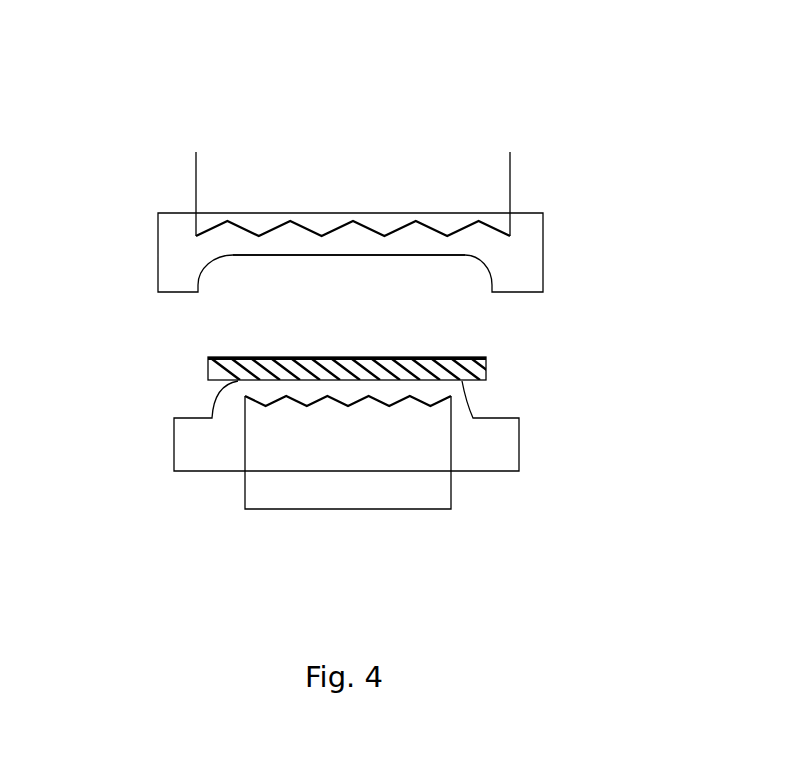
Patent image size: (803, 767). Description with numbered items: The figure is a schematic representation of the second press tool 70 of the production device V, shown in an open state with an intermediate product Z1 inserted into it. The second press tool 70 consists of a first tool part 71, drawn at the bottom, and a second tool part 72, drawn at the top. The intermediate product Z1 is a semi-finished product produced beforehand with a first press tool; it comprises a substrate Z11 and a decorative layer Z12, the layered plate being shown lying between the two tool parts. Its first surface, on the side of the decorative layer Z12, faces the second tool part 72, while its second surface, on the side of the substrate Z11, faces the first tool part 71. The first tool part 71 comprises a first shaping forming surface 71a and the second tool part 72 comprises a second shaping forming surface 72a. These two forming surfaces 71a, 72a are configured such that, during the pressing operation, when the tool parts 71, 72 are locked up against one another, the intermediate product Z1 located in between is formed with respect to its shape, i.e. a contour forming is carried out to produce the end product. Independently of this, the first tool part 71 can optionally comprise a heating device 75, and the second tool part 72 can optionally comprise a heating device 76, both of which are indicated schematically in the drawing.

The device V is at (545, 72).
The second press tool 70 is at (540, 134).
The second tool part 72 is at (175, 258).
The second shaping forming surface 72a is at (350, 257).
The heating device 76 is at (510, 173).
The intermediate product Z1 is at (500, 369).
The substrate Z11 is at (208, 369).
The decorative layer Z12 is at (310, 357).
The first tool part 71 is at (505, 433).
The first shaping forming surface 71a is at (468, 383).
The heating device 75 is at (456, 530).